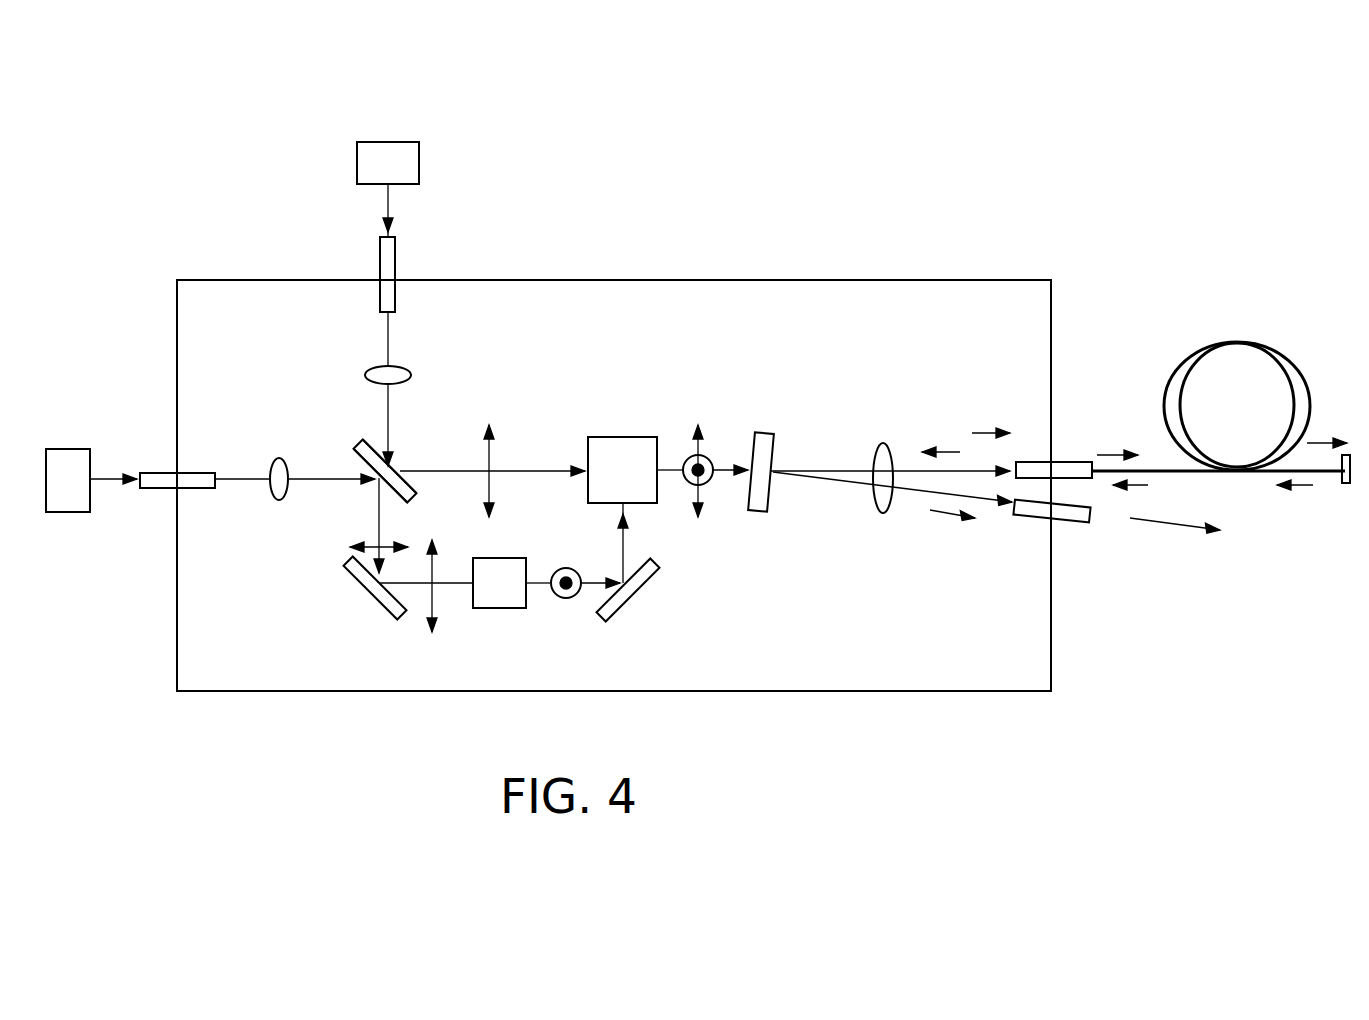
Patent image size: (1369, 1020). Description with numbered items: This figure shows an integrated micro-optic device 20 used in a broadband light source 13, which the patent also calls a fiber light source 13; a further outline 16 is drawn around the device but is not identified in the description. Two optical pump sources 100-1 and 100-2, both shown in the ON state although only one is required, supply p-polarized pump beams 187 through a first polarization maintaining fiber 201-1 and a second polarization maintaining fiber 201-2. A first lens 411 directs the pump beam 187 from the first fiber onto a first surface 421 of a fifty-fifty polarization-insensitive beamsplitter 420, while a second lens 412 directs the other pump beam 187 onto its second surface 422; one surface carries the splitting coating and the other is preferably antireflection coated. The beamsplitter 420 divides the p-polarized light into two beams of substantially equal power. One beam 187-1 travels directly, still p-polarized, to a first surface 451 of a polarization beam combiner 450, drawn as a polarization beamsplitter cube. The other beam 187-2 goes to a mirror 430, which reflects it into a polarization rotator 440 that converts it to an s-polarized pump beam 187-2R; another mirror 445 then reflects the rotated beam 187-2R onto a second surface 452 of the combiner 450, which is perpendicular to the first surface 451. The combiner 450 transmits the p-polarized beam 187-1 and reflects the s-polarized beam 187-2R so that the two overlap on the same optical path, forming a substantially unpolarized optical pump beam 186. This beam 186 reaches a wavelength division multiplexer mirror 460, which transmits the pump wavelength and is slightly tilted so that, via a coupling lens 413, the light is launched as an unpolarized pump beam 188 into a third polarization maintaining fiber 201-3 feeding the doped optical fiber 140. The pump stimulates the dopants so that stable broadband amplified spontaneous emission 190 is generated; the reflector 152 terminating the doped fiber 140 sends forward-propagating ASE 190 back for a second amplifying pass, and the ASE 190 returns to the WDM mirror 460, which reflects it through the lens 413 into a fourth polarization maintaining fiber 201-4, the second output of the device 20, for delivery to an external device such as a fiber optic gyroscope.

The broadband light source 13 is at (702, 61).
The housing 16 is at (614, 459).
The integrated micro-optic device 20 is at (614, 459).
The first optical pump source 100-1 is at (85, 515).
The second optical pump source 100-2 is at (416, 149).
The doped optical fiber 140 is at (1237, 384).
The reflector 152 is at (1323, 509).
The unpolarized optical pump beam 186 is at (847, 455).
The polarized pump beam 187 is at (261, 367).
The first pump beam 187-1 is at (492, 471).
The second pump beam 187-2 is at (475, 561).
The rotated second optical pump beam 187-2R is at (611, 577).
The unpolarized optical pump beam 188 is at (1218, 443).
The broadband ASE 190 is at (1066, 482).
The first polarization maintaining fiber 201-1 is at (146, 448).
The second polarization maintaining fiber 201-2 is at (414, 262).
The third polarization maintaining fiber 201-3 is at (1078, 432).
The fourth polarization maintaining fiber 201-4 is at (1070, 540).
The first lens 411 is at (265, 457).
The second lens 412 is at (411, 353).
The coupling lens 413 is at (891, 452).
The polarization-insensitive beamsplitter 420 is at (378, 479).
The first surface 421 is at (352, 472).
The second surface 422 is at (408, 480).
The mirror 430 is at (367, 607).
The polarization rotator 440 is at (508, 563).
The mirror 445 is at (660, 590).
The polarization beam combiner 450 is at (627, 474).
The first surface 451 is at (570, 481).
The second surface 452 is at (645, 526).
The wavelength division multiplexer mirror 460 is at (782, 461).